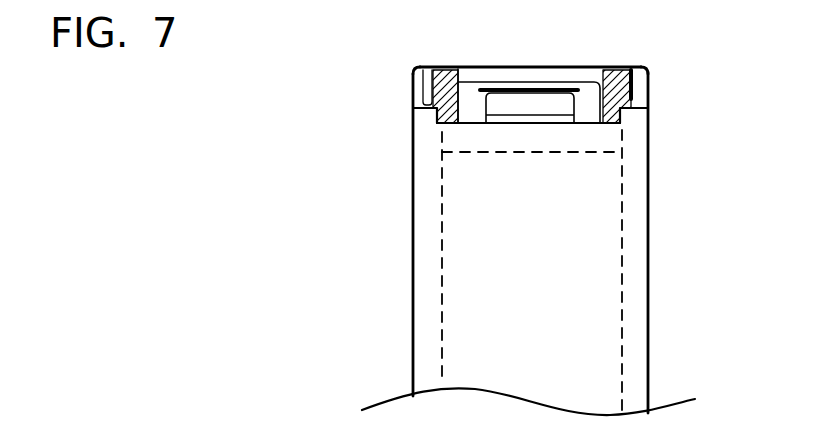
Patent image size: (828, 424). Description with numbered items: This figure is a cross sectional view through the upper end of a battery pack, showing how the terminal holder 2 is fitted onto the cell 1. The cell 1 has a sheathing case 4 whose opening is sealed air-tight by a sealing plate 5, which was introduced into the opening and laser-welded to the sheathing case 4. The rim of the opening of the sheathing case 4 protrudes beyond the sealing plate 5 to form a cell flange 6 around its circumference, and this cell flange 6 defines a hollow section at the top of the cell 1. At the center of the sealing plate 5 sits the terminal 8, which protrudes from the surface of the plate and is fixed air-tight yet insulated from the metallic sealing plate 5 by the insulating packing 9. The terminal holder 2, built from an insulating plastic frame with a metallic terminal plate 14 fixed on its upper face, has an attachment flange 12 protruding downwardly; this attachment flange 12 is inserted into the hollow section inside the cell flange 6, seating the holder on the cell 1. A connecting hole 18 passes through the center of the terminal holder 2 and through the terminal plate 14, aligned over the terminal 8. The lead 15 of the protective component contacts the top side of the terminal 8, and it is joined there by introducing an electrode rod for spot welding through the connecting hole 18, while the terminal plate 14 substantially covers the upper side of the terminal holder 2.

The cell 1 is at (390, 235).
The terminal holder 2 is at (645, 82).
The sheathing case 4 is at (411, 280).
The sealing plate 5 is at (508, 143).
The cell flange 6 is at (411, 117).
The terminal 8 is at (512, 98).
The insulating packing 9 is at (562, 117).
The attachment flange 12 is at (464, 124).
The terminal plate 14 is at (424, 76).
The lead 15 is at (483, 84).
The connecting hole 18 is at (543, 67).